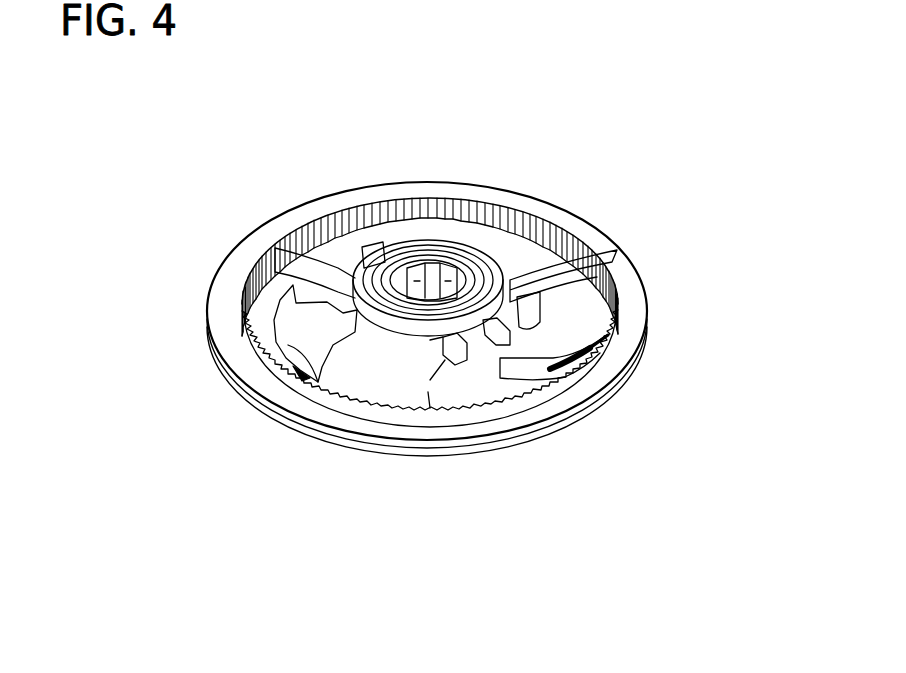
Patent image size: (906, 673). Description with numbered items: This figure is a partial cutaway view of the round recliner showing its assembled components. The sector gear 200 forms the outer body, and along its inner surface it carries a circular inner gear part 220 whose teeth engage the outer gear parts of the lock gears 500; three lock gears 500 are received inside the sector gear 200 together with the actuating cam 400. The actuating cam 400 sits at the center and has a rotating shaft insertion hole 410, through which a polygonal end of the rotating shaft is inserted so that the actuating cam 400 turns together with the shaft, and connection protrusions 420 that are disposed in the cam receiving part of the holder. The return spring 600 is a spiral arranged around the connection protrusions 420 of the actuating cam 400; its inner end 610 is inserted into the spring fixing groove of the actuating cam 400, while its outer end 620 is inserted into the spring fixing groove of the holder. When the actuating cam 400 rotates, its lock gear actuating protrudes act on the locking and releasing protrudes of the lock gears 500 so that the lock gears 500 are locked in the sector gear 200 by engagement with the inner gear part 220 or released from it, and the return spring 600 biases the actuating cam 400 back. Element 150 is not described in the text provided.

The sector gear 200 is at (228, 239).
The circular inner gear part 220 is at (548, 197).
The lock gears 500 is at (603, 343).
The return spring 600 is at (340, 300).
The inner end of the return spring 610 is at (452, 272).
The connection protrusions 420 is at (427, 266).
The rotating shaft insertion hole 410 is at (380, 252).
The actuating cam 400 is at (352, 355).
The outer end of the return spring 620 is at (600, 256).
The pawl 150 is at (558, 352).